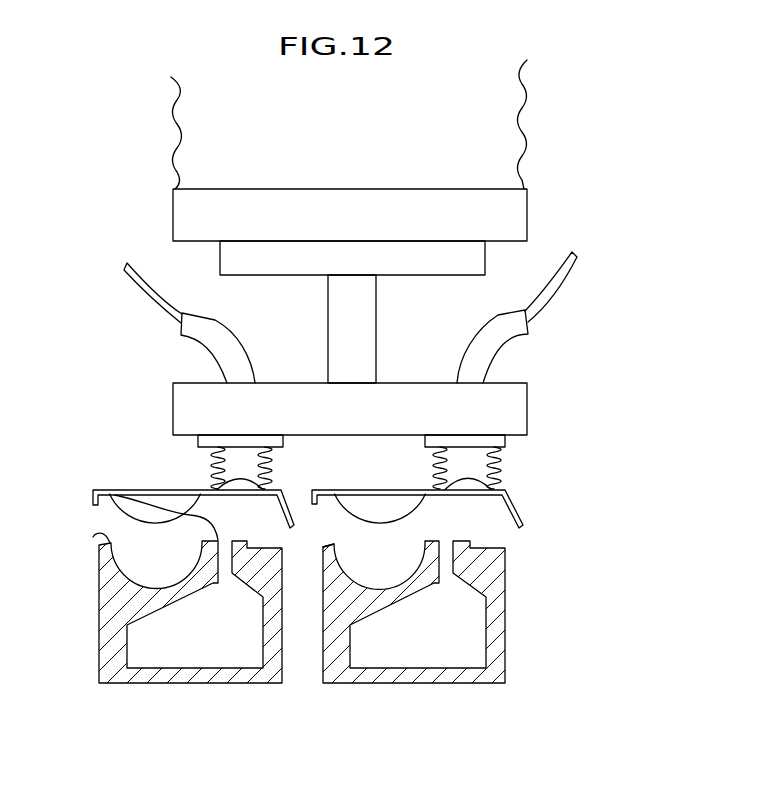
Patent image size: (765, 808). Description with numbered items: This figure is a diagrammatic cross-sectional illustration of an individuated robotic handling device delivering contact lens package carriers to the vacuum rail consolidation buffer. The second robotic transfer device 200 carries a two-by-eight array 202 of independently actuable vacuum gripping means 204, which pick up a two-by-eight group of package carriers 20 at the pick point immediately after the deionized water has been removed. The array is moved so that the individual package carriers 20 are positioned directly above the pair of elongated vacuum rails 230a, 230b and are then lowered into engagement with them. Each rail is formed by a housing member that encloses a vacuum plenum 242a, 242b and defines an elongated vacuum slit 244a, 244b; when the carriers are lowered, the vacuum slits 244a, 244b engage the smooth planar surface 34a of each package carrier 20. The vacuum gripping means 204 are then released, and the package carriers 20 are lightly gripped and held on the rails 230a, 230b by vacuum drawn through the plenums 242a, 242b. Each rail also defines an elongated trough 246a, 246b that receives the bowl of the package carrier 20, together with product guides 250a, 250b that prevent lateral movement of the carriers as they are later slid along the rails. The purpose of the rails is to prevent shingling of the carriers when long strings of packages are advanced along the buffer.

The second robotic transfer device 200 is at (353, 122).
The 2×8 array 202 is at (530, 408).
The vacuum gripping means 204 is at (213, 466).
The package carrier 20 is at (133, 489).
The vacuum slit 244a is at (117, 494).
The vacuum slit 244b is at (442, 541).
The smooth planar surface 34a is at (213, 494).
The vacuum rail 230a is at (204, 631).
The vacuum rail 230b is at (413, 592).
The elongated trough 246a is at (193, 561).
The elongated trough 246b is at (410, 561).
The vacuum plenum 242a is at (252, 642).
The vacuum plenum 242b is at (458, 642).
The product guide 250a is at (93, 537).
The product guide 250b is at (332, 545).